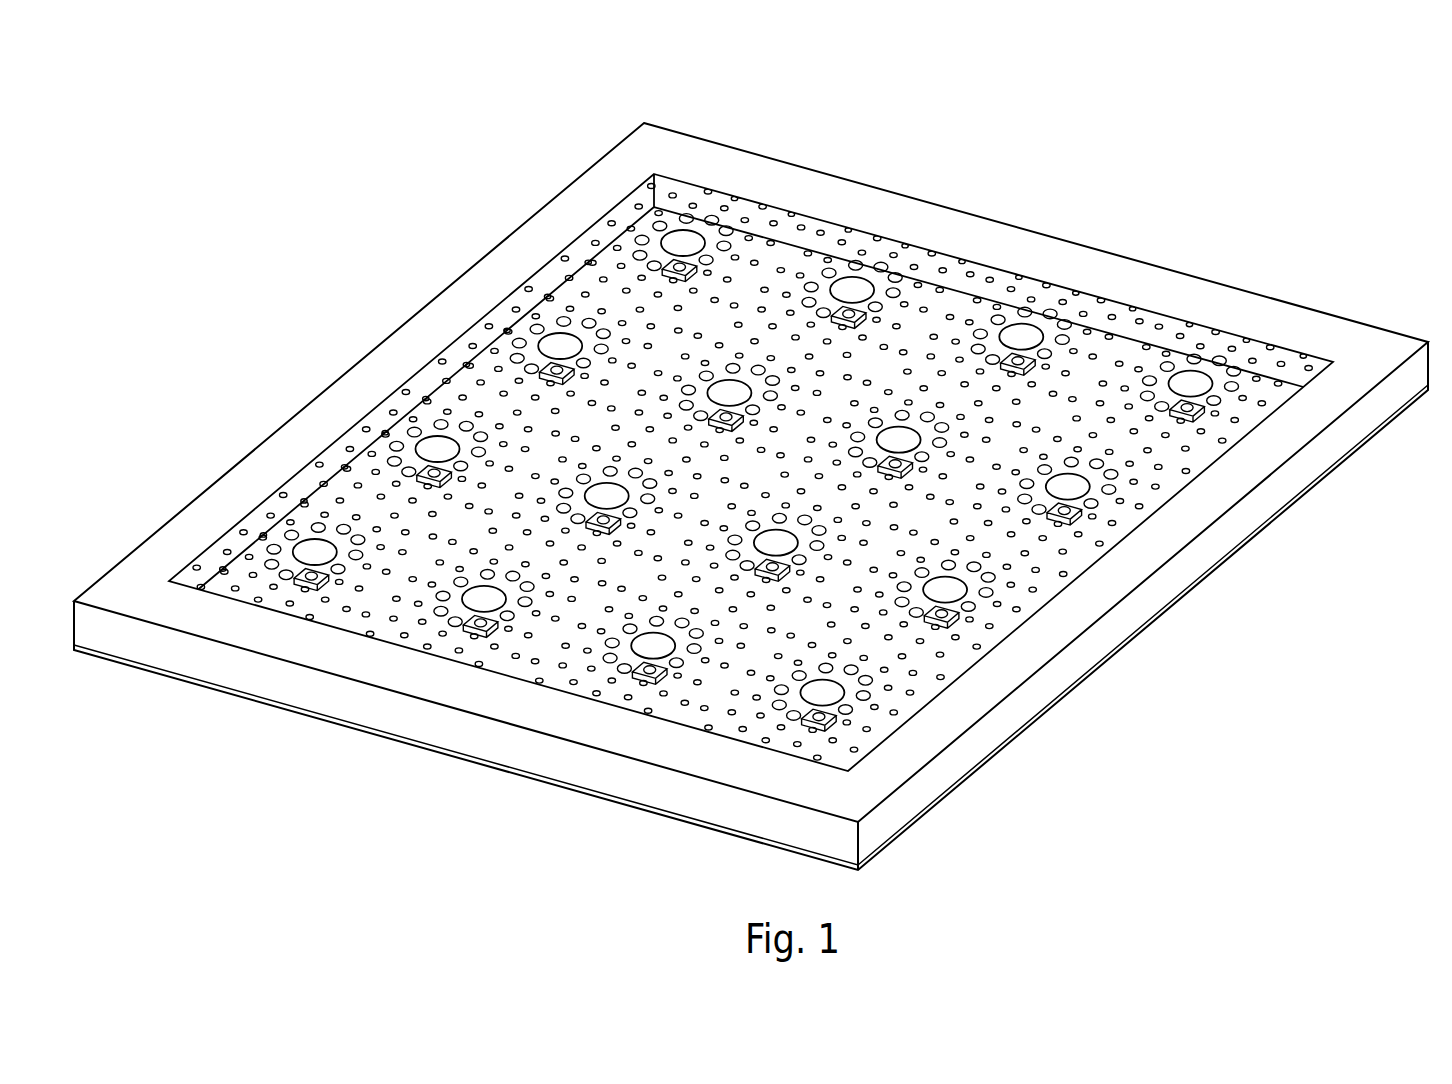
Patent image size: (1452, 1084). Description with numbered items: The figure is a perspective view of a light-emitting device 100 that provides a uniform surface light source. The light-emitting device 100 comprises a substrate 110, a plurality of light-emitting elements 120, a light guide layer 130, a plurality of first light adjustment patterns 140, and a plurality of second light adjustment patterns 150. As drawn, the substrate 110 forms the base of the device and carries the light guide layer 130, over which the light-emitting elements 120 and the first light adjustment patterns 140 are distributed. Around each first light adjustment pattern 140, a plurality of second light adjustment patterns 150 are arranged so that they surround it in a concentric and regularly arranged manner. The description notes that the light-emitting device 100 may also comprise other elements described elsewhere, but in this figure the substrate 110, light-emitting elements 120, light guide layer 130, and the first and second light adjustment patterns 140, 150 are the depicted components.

The light-emitting device 100 is at (751, 453).
The substrate 110 is at (1005, 748).
The light-emitting elements 120 is at (957, 622).
The light guide layer 130 is at (1130, 525).
The first light adjustment patterns 140 is at (1197, 385).
The second light adjustment patterns 150 is at (1112, 478).